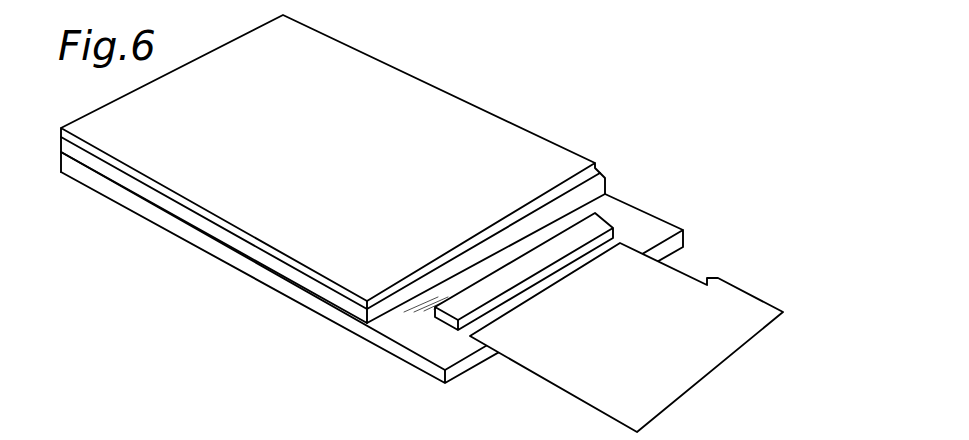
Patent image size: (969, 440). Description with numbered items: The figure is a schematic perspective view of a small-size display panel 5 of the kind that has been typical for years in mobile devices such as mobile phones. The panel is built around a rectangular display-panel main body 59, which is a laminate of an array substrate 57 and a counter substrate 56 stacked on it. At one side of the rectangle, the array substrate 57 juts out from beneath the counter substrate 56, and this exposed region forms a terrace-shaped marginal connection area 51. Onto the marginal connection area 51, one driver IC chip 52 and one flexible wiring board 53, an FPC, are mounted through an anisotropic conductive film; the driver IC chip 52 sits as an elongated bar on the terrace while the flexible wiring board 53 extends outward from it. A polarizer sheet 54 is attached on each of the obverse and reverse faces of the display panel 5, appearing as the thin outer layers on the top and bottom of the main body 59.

The display panel 5 is at (629, 129).
The marginal connection area 51 is at (642, 230).
The driver IC chip 52 is at (435, 318).
The flexible wiring board 53 is at (557, 345).
The polarizer sheet 54 is at (300, 312).
The counter substrate 56 is at (200, 223).
The array substrate 57 is at (235, 257).
The display-panel main body 59 is at (333, 180).